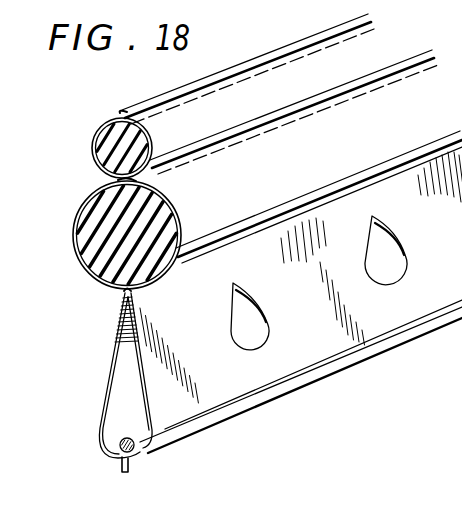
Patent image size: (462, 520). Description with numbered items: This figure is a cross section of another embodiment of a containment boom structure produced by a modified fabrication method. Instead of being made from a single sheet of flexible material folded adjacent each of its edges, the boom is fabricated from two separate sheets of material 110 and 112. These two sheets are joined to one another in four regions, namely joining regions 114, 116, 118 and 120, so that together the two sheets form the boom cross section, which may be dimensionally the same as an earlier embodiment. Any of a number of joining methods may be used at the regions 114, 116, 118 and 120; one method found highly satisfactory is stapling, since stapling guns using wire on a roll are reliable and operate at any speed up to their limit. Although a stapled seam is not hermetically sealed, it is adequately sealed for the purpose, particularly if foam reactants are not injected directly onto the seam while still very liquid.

The sheet of material 110 is at (78, 224).
The sheet of material 112 is at (207, 222).
The joining region 114 is at (122, 114).
The joining region 116 is at (140, 182).
The joining region 118 is at (125, 292).
The joining region 120 is at (130, 462).